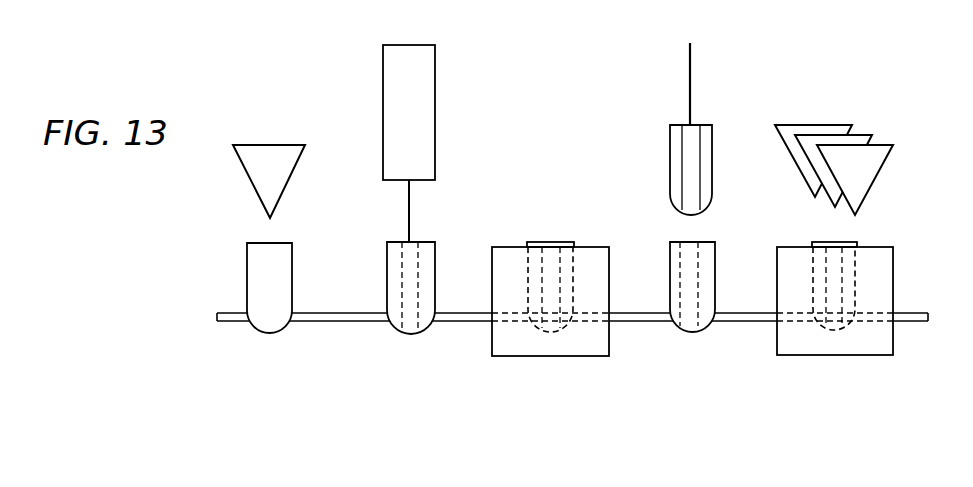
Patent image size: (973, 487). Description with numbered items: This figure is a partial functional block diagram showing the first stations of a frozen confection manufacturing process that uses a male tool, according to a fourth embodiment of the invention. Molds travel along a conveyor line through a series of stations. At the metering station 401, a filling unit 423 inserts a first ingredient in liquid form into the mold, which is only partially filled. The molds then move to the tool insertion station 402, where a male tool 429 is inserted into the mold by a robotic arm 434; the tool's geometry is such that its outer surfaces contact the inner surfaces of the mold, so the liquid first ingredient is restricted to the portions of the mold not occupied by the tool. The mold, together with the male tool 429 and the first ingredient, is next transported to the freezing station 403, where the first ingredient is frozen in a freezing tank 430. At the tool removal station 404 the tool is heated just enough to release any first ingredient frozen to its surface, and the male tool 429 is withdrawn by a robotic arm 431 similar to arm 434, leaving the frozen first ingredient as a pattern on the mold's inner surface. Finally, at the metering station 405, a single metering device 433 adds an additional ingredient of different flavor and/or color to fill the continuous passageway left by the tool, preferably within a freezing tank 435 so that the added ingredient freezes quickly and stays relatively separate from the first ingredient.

The metering station 401 is at (268, 370).
The tool insertion station 402 is at (410, 370).
The freezing station 403 is at (547, 370).
The tool removal station 404 is at (690, 370).
The metering station 405 is at (832, 370).
The filling unit 423 is at (262, 172).
The male tool 429 is at (410, 300).
The freezing tank 430 is at (492, 283).
The robotic arm 431 is at (692, 92).
The metering device 433 is at (857, 138).
The robotic arm 434 is at (408, 202).
The freezing tank 435 is at (880, 273).